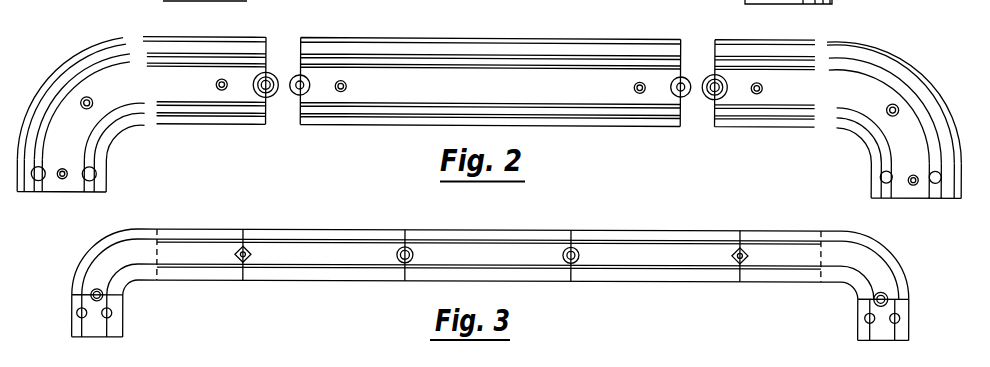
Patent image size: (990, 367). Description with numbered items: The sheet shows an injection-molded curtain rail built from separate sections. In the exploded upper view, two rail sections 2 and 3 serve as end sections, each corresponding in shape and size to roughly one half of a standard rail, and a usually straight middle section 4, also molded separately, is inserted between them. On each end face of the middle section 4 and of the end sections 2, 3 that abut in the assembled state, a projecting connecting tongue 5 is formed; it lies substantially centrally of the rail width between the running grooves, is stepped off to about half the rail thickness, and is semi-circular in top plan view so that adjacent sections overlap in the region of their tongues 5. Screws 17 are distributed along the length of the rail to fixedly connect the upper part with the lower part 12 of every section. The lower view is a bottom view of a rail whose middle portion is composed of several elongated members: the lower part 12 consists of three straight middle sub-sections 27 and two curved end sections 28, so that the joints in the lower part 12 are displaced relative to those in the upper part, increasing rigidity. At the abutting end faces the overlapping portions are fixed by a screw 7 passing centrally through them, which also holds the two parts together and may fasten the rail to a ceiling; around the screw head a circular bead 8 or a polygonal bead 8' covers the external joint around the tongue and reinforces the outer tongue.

In FIG. 2, the rail section 2 is at (197, 87).
In FIG. 2, the rail section 3 is at (875, 97).
In FIG. 2, the middle section 4 is at (408, 85).
In FIG. 2, the connecting tongue 5 is at (296, 76).
In FIG. 2, the screw 17 is at (341, 80).
In FIG. 3, the screw 7 is at (247, 248).
In FIG. 3, the circular bead 8 is at (588, 228).
In FIG. 3, the polygonal bead 8' is at (762, 228).
In FIG. 3, the lower part 12 is at (491, 274).
In FIG. 3, the straight middle sub-section 27 is at (340, 252).
In FIG. 3, the curved end section 28 is at (215, 252).